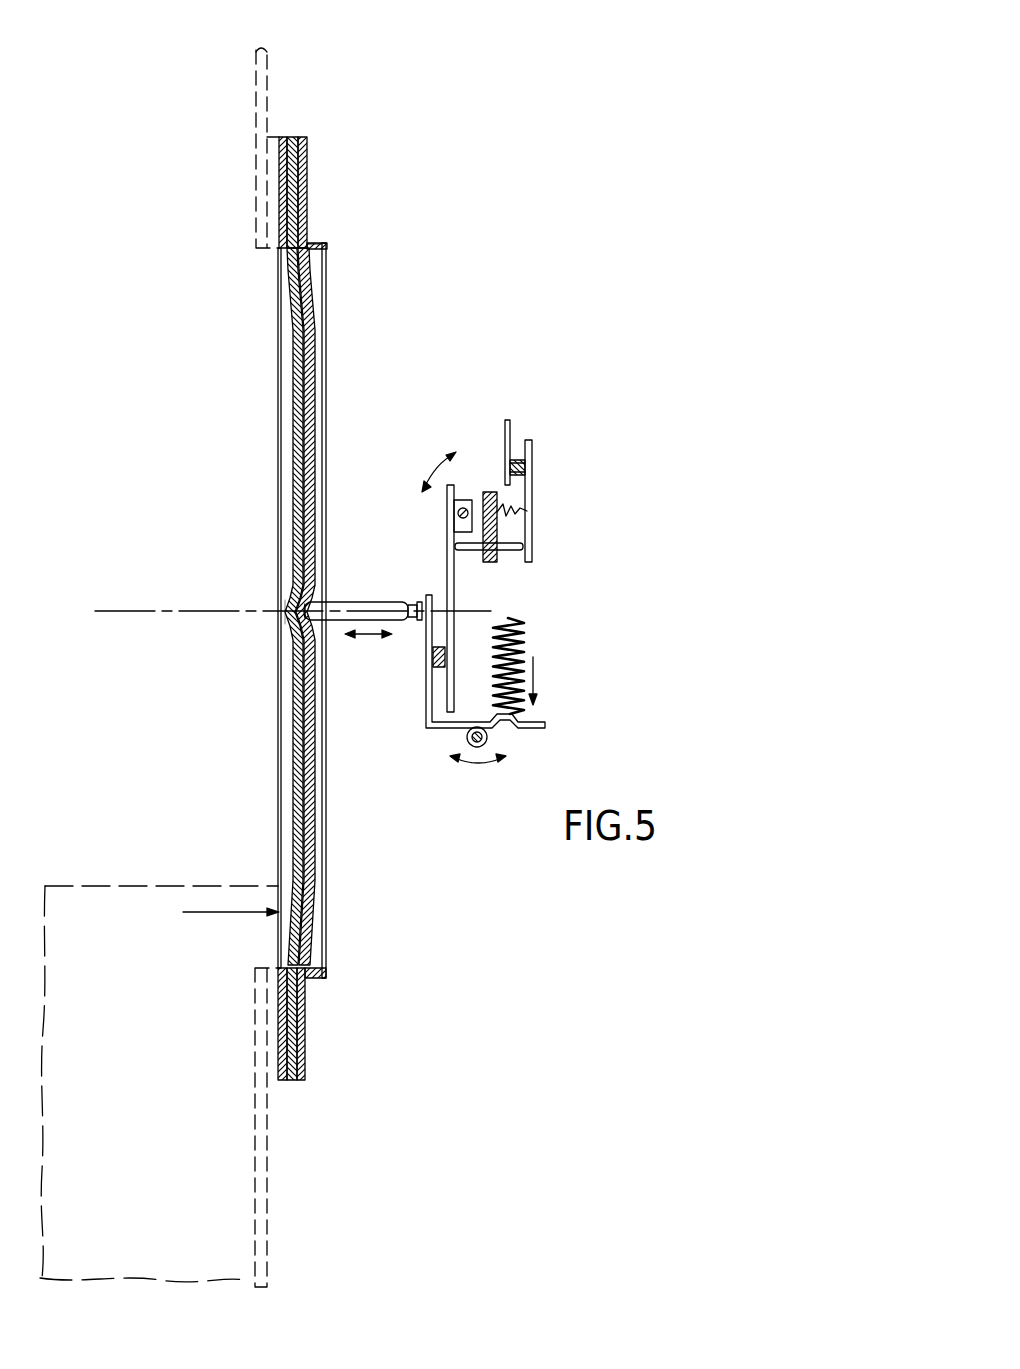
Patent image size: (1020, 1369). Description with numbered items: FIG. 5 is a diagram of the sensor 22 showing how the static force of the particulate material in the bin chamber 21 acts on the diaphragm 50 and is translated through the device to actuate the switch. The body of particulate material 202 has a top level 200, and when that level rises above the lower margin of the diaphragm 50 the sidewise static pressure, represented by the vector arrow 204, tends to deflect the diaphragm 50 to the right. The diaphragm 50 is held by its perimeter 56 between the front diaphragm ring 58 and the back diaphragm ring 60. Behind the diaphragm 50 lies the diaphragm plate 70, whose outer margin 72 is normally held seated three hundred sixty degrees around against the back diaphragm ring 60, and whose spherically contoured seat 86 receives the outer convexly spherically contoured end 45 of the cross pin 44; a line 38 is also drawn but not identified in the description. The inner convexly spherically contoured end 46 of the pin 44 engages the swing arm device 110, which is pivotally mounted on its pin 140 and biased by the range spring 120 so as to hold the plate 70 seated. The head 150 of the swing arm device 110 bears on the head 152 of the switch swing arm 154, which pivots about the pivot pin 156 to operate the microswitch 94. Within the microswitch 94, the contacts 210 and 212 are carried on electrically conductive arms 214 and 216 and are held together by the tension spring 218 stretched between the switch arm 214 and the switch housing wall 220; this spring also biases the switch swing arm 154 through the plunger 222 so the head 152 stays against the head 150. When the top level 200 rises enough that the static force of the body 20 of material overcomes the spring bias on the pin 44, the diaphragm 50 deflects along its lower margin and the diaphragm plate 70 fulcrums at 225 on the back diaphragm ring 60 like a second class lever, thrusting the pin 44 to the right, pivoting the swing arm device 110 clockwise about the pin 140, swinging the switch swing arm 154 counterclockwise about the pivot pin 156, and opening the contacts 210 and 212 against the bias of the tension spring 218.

The body 20 is at (272, 52).
The bin chamber 21 is at (194, 56).
The sensor 22 is at (408, 939).
The axis 38 is at (133, 605).
The cross pin 44 is at (373, 604).
The outer convexly spherically contoured end 45 is at (322, 602).
The inner convexly spherically contoured end 46 is at (424, 598).
The diaphragm 50 is at (297, 350).
The diaphragm perimeter 56 is at (292, 137).
The front diaphragm ring 58 is at (283, 137).
The back diaphragm ring 60 is at (302, 137).
The diaphragm plate 70 is at (317, 412).
The outer margin 72 is at (322, 243).
The spherically contoured seat 86 is at (287, 610).
The microswitch 94 is at (576, 440).
The swing arm device 110 is at (445, 666).
The range spring 120 is at (557, 658).
The pin 140 is at (490, 740).
The head 150 is at (445, 655).
The head 152 is at (445, 655).
The switch swing arm 154 is at (457, 603).
The pivot pin 156 is at (463, 508).
The top level 200 is at (155, 886).
The body of particulate material 202 is at (200, 1128).
The vector arrow 204 is at (228, 913).
The contact 210 is at (523, 470).
The contact 212 is at (518, 460).
The switch arm 214 is at (532, 443).
The switch arm 216 is at (507, 421).
The tension spring 218 is at (530, 520).
The switch housing wall 220 is at (487, 492).
The plunger 222 is at (525, 549).
The fulcrum 225 is at (310, 245).